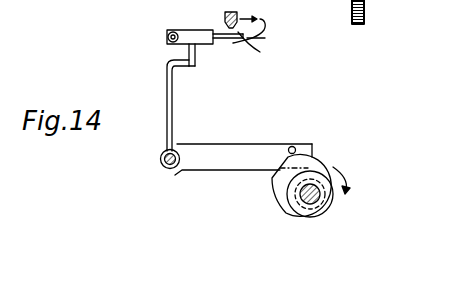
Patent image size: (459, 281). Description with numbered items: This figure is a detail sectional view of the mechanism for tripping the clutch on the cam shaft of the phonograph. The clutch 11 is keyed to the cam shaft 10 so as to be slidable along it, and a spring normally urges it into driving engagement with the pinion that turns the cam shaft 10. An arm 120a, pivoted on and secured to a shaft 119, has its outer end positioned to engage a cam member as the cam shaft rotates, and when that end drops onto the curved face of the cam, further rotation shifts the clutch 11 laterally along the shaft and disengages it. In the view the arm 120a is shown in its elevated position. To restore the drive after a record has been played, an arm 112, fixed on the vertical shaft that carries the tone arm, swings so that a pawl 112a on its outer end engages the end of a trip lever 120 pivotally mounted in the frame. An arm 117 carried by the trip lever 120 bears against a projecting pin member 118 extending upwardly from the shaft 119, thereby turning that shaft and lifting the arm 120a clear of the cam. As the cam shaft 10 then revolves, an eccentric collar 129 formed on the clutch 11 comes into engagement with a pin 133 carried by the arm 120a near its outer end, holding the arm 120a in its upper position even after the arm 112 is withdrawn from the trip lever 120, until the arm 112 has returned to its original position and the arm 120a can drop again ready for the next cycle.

The cam shaft 10 is at (302, 203).
The clutch 11 is at (339, 207).
The arm 112 is at (224, 17).
The pawl 112a is at (263, 49).
The arm 117 is at (197, 61).
The projecting pin member 118 is at (166, 78).
The shaft 119 is at (173, 168).
The trip lever 120 is at (263, 40).
The arm 120a is at (226, 143).
The eccentric collar 129 is at (318, 160).
The pin 133 is at (294, 146).